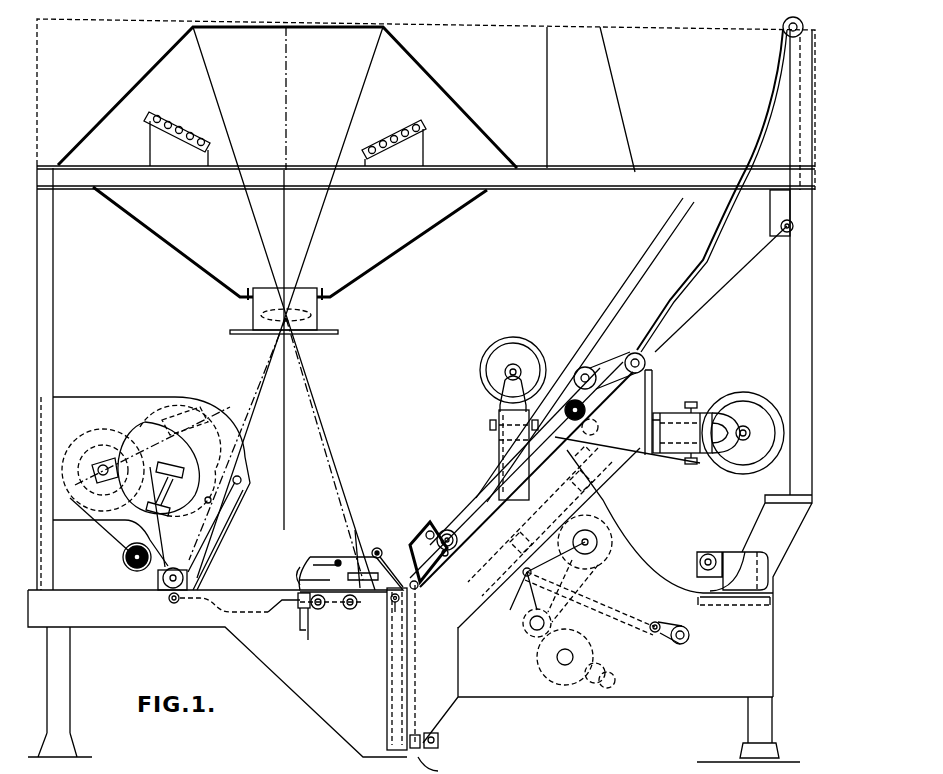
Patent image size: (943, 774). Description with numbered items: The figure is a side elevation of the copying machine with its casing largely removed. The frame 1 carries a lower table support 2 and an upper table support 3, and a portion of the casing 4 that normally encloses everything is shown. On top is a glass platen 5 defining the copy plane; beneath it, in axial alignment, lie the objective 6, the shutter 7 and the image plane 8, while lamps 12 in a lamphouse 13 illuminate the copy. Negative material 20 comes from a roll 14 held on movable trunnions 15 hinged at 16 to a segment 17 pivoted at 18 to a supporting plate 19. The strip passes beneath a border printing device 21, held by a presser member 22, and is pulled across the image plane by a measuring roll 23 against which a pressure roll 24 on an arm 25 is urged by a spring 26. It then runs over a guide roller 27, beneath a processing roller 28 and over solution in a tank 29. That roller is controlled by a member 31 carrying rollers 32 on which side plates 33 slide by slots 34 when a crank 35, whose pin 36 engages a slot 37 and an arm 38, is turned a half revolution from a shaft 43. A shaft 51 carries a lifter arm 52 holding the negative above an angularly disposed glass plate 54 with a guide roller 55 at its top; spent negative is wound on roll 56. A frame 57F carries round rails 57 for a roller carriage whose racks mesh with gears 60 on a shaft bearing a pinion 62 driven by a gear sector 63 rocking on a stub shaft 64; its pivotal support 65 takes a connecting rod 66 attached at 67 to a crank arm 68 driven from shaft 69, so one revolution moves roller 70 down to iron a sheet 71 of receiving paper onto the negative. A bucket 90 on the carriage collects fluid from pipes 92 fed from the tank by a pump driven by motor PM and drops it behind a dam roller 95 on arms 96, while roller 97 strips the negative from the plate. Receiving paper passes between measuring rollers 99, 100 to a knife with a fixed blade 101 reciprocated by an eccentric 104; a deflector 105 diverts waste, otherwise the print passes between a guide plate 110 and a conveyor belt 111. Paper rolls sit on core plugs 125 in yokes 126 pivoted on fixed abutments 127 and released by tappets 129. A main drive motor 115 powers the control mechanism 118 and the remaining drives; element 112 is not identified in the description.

The frame 1 is at (53, 309).
The lower table support 2 is at (70, 590).
The upper table support 3 is at (553, 190).
The casing 4 is at (38, 95).
The platen 5 is at (274, 28).
The objective 6 is at (312, 316).
The shutter 7 is at (330, 334).
The image plane 8 is at (272, 592).
The lamps 12 is at (190, 127).
The lamphouse 13 is at (433, 79).
The roll 14 is at (103, 428).
The movable trunnions 15 is at (100, 464).
The hinge 16 is at (172, 488).
The segment 17 is at (200, 436).
The pivot 18 is at (210, 496).
The supporting plate 19 is at (241, 476).
The negative material 20 is at (100, 530).
The border printing device 21 is at (124, 554).
The presser member 22 is at (126, 564).
The measuring roll 23 is at (177, 568).
The pressure roll 24 is at (173, 604).
The arm 25 is at (211, 613).
The spring 26 is at (252, 608).
The guide roller 27 is at (391, 601).
The processing roller 28 is at (393, 612).
The tank 29 is at (387, 692).
The member 31 is at (358, 560).
The rollers 32 is at (340, 557).
The side plates 33 is at (334, 561).
The slots 34 is at (300, 567).
The crank 35 is at (308, 640).
The pin 36 is at (298, 604).
The slot 37 is at (300, 616).
The arm 38 is at (302, 630).
The shaft 43 is at (349, 610).
The shaft 51 is at (375, 548).
The lifter arm 52 is at (385, 555).
The rigid plate 54 is at (490, 515).
The guide roller 55 is at (566, 453).
The used sensitized paper roll 56 is at (752, 395).
The round rails 57 is at (575, 482).
The frame 57F is at (455, 665).
The gears 60 is at (627, 495).
The pinion 62 is at (597, 546).
The gear sector 63 is at (575, 575).
The stub shaft 64 is at (530, 630).
The pivotal support 65 is at (520, 598).
The connecting rod 66 is at (620, 603).
The pivot 67 is at (655, 621).
The crank arm 68 is at (660, 634).
The shaft 69 is at (690, 635).
The roller 70 is at (448, 530).
The sheet of receiving paper 71 is at (492, 487).
The bucket 90 is at (428, 531).
The pipes 92 is at (418, 690).
The dam roller 95 is at (416, 588).
The arms 96 is at (428, 522).
The roller 97 is at (449, 553).
The measuring roller 99 is at (565, 411).
The measuring roller 100 is at (598, 429).
The fixed blade 101 is at (652, 397).
The eccentric 104 is at (590, 364).
The deflector 105 is at (652, 378).
The sheet-metal guide plate 110 is at (690, 288).
The conveyor belt 111 is at (712, 310).
The top pulley 112 is at (772, 40).
The main drive motor 115 is at (738, 552).
The control mechanism 118 is at (540, 690).
The core plugs 125 is at (482, 370).
The yokes 126 is at (500, 388).
The fixed abutments 127 is at (499, 438).
The tappets 129 is at (488, 424).
The motor PM is at (438, 745).